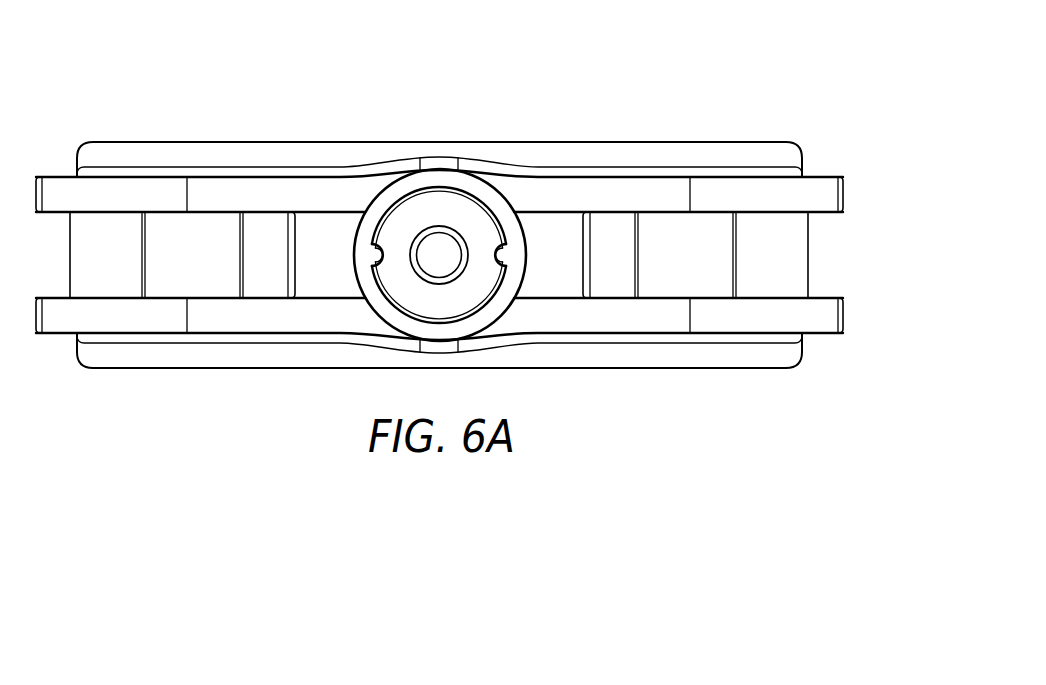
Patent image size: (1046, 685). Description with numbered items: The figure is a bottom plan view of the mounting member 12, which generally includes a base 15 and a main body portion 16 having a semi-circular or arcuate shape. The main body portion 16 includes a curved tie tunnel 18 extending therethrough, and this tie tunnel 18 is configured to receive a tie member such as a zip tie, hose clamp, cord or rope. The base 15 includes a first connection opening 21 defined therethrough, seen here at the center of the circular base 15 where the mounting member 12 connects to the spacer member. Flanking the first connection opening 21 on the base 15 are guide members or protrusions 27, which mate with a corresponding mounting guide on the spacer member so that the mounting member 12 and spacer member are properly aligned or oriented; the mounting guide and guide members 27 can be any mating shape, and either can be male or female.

The mounting member 12 is at (700, 96).
The base 15 is at (402, 189).
The main body portion 16 is at (662, 315).
The tie tunnel 18 is at (797, 262).
The first connection opening 21 is at (473, 218).
The guide members 27 is at (372, 254).